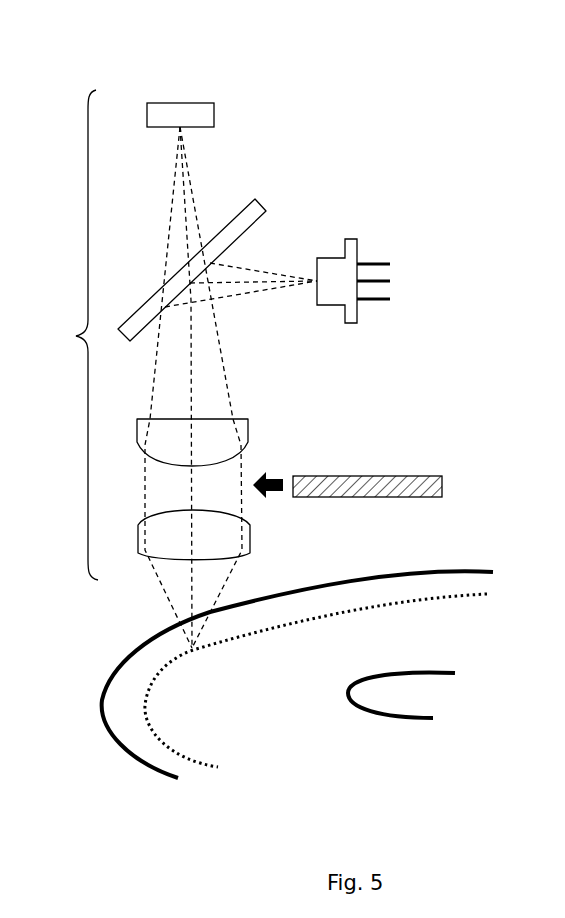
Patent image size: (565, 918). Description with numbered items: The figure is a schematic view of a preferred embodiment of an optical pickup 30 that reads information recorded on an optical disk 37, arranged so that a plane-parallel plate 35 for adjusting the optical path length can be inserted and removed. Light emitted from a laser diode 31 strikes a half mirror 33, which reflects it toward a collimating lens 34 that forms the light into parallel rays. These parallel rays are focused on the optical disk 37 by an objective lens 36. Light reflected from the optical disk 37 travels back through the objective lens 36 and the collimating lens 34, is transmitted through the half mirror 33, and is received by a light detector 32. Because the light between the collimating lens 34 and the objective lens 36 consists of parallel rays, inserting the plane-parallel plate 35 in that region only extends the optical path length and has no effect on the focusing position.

The optical pickup 30 is at (63, 335).
The laser diode 31 is at (357, 245).
The light detector 32 is at (212, 101).
The half mirror 33 is at (263, 202).
The collimating lens 34 is at (248, 430).
The plane-parallel plate 35 is at (442, 476).
The objective lens 36 is at (250, 545).
The optical disk 37 is at (465, 572).